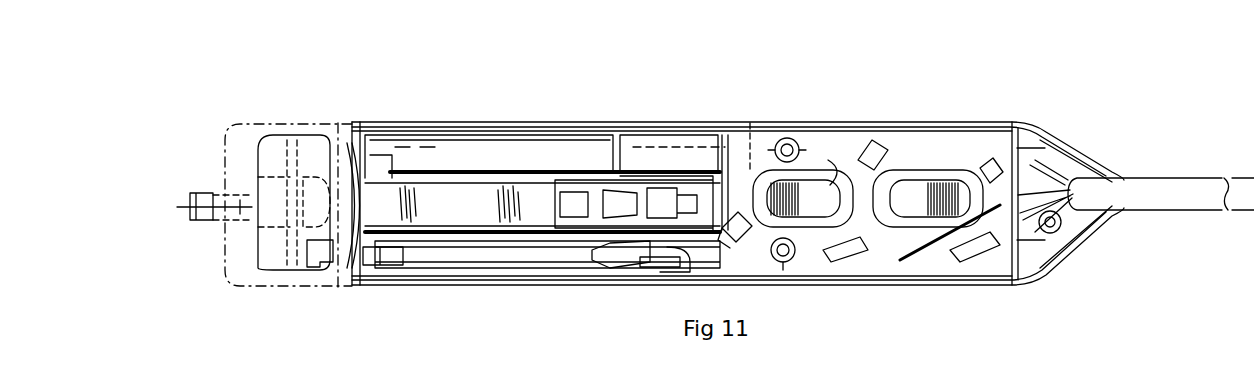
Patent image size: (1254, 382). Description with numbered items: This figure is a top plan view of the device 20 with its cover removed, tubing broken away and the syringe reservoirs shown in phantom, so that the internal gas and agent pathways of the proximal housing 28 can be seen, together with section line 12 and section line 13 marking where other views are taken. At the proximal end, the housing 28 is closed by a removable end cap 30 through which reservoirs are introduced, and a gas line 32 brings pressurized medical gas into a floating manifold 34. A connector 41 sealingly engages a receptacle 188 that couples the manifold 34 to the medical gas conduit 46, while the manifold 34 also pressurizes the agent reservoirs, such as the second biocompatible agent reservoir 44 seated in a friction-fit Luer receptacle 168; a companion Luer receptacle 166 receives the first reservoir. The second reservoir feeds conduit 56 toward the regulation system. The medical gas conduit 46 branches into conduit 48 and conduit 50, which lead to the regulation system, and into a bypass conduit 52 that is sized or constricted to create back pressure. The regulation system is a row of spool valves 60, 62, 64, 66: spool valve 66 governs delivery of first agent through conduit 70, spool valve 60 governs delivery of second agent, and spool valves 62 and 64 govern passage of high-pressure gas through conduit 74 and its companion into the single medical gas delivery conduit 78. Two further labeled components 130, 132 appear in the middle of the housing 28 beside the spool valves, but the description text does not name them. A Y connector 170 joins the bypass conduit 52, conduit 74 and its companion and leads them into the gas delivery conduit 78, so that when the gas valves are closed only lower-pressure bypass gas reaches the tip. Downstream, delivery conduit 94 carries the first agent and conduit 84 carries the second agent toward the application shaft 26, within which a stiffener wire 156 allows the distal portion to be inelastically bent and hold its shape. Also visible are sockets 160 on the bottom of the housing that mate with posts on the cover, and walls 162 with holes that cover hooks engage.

The section line 12— 12 is at (187, 164).
The section line 13— 13 is at (728, 210).
The device 20 is at (536, 80).
The application shaft 26 is at (1218, 211).
The housing 28 is at (652, 112).
The end cap 30 is at (243, 300).
The gas line 32 is at (193, 222).
The manifold 34 is at (278, 137).
The connector 41 is at (334, 267).
The second biocompatible agent reservoir 44 is at (338, 123).
The medical gas conduit 46 is at (515, 252).
The conduit 48 is at (625, 245).
The conduit 50 is at (640, 250).
The bypass conduit 52 is at (665, 258).
The conduit 56 is at (738, 242).
The spool valve 60 is at (746, 160).
The spool valve 62 is at (833, 155).
The spool valve 64 is at (907, 167).
The spool valve 66 is at (967, 137).
The conduit 70 is at (1002, 160).
The conduit 74 is at (880, 140).
The medical gas delivery conduit 78 is at (1058, 203).
The conduit 84 is at (1068, 183).
The delivery conduit 94 is at (1035, 217).
The first solenoid 130 is at (812, 183).
The second solenoid 132 is at (920, 187).
The stiffener wire 156 is at (917, 257).
The sockets 160 is at (787, 138).
The walls 162 is at (1013, 137).
The Luer receptacle 166 is at (590, 210).
The Luer receptacle 168 is at (665, 195).
The Y connector 170 is at (998, 263).
The receptacle 188 is at (385, 262).